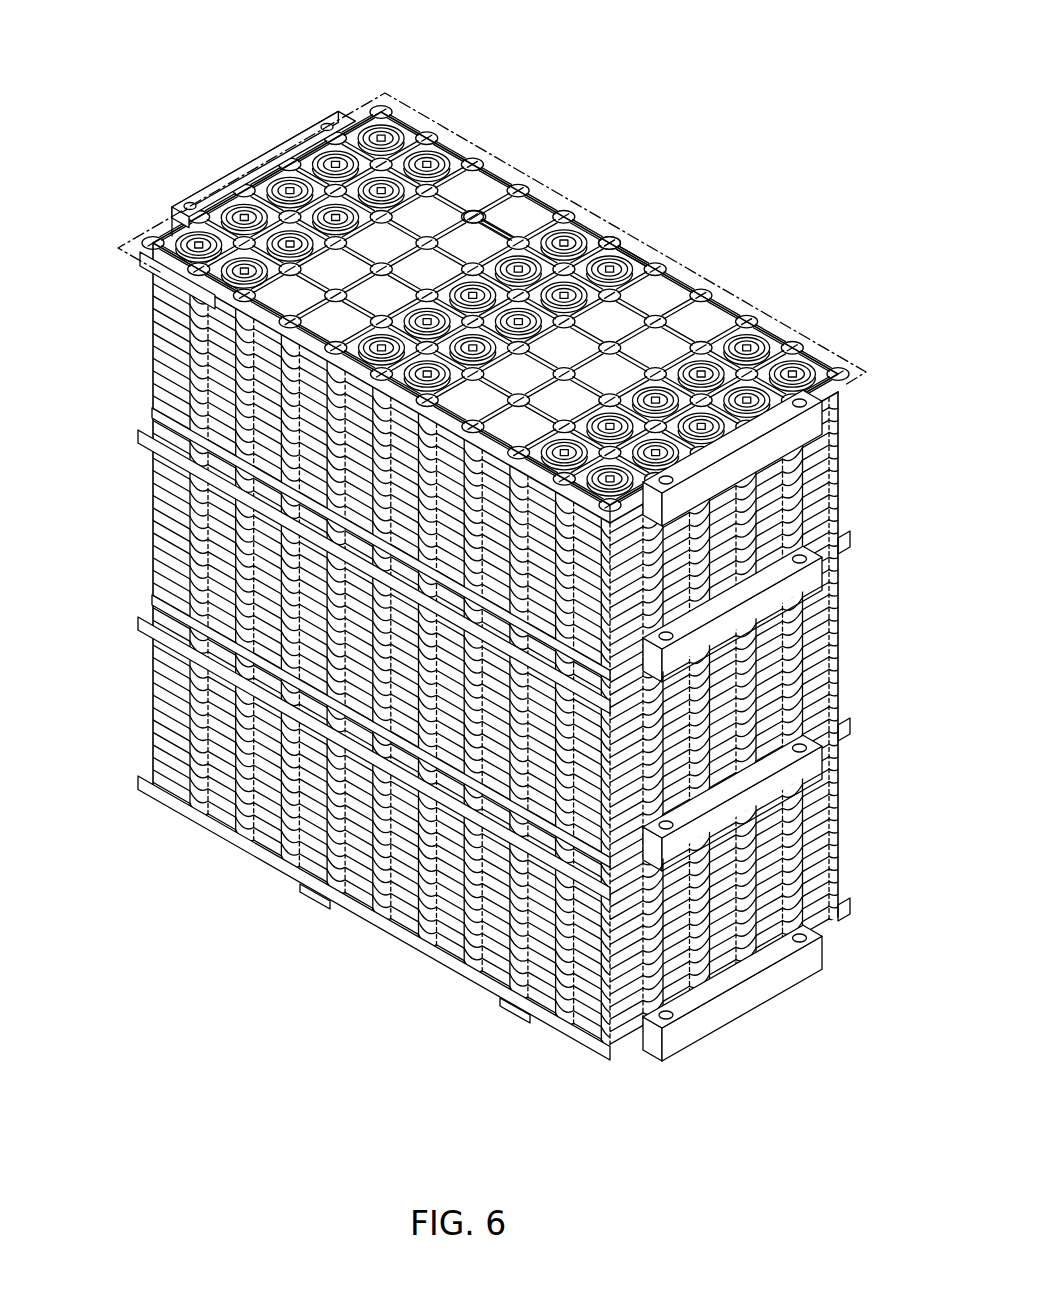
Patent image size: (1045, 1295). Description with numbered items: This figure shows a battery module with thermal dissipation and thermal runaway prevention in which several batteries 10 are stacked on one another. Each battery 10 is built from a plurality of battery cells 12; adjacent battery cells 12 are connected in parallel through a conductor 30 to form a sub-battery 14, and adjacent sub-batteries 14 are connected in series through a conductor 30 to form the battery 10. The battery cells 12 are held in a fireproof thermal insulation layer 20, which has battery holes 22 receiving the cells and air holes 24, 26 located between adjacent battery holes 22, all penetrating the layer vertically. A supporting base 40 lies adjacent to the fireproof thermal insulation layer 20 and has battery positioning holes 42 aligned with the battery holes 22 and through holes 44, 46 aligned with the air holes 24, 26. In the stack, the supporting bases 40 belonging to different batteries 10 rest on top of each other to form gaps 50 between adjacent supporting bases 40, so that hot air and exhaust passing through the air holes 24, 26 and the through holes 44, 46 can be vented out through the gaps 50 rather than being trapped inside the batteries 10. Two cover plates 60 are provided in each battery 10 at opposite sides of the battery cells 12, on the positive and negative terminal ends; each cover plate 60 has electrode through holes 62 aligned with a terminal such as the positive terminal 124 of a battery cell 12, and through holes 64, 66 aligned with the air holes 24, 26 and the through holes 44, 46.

The battery 10 is at (300, 158).
The battery cell 12 is at (440, 160).
The sub-battery 14 is at (835, 372).
The fireproof thermal insulation layer 20 is at (822, 482).
The conductor 30 is at (360, 910).
The supporting base 40 is at (737, 1000).
The gap 50 is at (200, 640).
The cover plate 60 is at (496, 560).
The electrode through hole 62 is at (698, 223).
The through hole 64 is at (560, 160).
The through hole 66 is at (585, 185).
The battery positioning hole 42 is at (624, 252).
The positive terminal 124 is at (624, 252).
The battery hole 22 is at (622, 255).
The through hole 44 is at (475, 217).
The air hole 24 is at (485, 200).
The through hole 46 is at (498, 230).
The air hole 26 is at (495, 225).